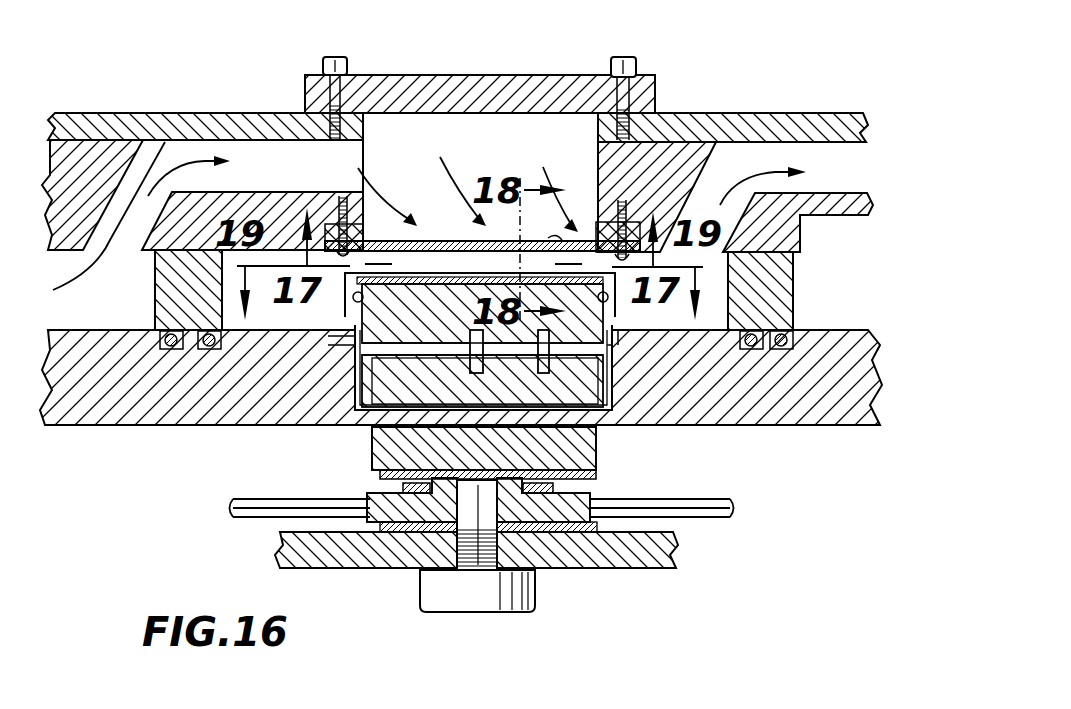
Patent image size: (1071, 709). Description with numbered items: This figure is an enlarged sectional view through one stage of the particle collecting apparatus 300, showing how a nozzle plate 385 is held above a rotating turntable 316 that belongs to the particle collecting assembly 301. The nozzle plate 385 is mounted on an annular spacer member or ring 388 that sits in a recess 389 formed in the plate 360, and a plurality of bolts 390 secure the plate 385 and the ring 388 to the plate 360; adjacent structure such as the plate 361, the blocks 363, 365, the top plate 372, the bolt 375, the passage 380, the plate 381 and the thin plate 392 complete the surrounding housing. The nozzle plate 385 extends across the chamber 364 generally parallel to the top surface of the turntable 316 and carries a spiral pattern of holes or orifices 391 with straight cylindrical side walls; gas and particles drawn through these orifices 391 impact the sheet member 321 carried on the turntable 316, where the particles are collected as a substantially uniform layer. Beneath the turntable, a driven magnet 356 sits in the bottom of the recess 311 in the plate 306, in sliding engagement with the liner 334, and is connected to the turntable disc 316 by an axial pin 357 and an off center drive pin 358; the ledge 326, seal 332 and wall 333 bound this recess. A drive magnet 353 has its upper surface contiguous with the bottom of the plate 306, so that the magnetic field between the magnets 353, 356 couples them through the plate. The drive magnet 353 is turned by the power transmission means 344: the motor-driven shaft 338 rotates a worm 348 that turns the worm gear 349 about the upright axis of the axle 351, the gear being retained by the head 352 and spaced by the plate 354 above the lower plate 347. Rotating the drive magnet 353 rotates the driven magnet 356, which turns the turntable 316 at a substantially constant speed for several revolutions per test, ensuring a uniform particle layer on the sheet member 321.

The apparatus assembly 300 is at (805, 82).
The particle collecting assembly 301 is at (457, 421).
The plate 306 is at (157, 407).
The recess 311 is at (358, 368).
The turntable 316 is at (412, 312).
The sheet member 321 is at (478, 290).
The ledge 326 is at (334, 336).
The seal 332 is at (614, 340).
The side wall 333 is at (612, 346).
The liner 334 is at (607, 408).
The shaft 338 is at (694, 518).
The power transmission means 344 is at (436, 572).
The lower plate 347 is at (648, 563).
The worm 348 is at (553, 490).
The worm gear 349 is at (407, 507).
The axle 351 is at (470, 500).
The bolt head 352 is at (538, 596).
The drive magnet 353 is at (388, 434).
The thin plate 354 is at (430, 476).
The driven magnet 356 is at (380, 398).
The axial pin 357 is at (472, 338).
The off center drive pin 358 is at (538, 353).
The plate 360 is at (84, 122).
The left upper plate 361 is at (236, 120).
The left support block 363 is at (62, 326).
The chamber 364 is at (458, 147).
The right support block 365 is at (830, 280).
The top plate 372 is at (508, 78).
The bolt 375 is at (636, 62).
The passage 380 is at (144, 172).
The right upper plate 381 is at (726, 140).
The nozzle plate 385 is at (450, 240).
The annular spacer member or ring 388 is at (587, 194).
The recess 389 is at (333, 205).
The bolts 390 is at (349, 194).
The holes or orifices 391 is at (546, 226).
The bottom plate 392 is at (433, 264).